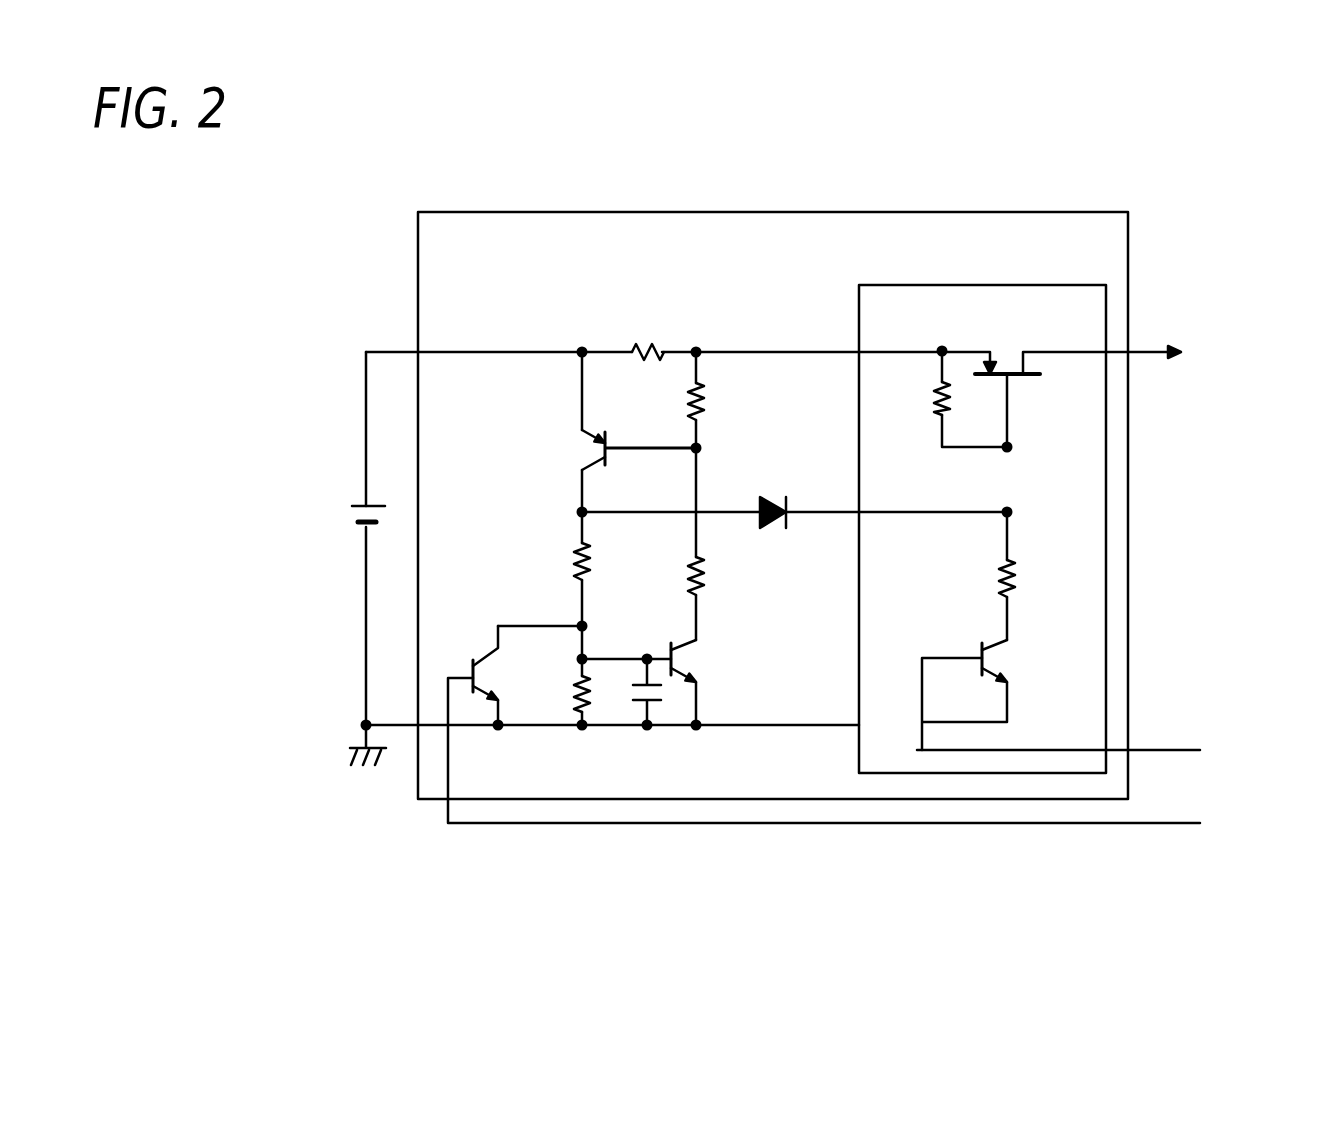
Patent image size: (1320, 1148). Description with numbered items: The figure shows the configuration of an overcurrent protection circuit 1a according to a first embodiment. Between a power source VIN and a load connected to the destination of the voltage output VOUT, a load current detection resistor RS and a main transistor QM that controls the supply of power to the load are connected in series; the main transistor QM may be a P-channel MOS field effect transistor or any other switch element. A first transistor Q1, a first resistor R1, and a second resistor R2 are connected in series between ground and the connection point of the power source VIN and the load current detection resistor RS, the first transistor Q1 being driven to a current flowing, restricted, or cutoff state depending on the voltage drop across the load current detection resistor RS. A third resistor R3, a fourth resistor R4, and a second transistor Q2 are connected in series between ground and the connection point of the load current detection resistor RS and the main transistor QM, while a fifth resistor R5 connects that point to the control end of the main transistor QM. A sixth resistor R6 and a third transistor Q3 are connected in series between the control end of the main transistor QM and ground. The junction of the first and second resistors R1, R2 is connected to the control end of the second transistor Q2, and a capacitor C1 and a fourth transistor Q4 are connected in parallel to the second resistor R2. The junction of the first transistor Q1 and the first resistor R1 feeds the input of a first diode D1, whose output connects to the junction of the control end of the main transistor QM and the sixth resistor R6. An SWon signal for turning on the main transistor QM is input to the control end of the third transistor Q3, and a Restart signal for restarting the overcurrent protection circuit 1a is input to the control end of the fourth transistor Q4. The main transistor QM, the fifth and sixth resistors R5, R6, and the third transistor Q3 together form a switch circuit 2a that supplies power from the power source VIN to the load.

The overcurrent protection circuit 1a is at (773, 490).
The switch circuit 2a is at (982, 513).
The load current detection resistor RS is at (644, 329).
The first resistor R1 is at (551, 563).
The second resistor R2 is at (556, 695).
The third resistor R3 is at (673, 408).
The fourth resistor R4 is at (731, 581).
The fifth resistor R5 is at (915, 409).
The sixth resistor R6 is at (1031, 582).
The capacitor C1 is at (629, 694).
The first transistor Q1 is at (603, 458).
The second transistor Q2 is at (712, 682).
The third transistor Q3 is at (993, 695).
The fourth transistor Q4 is at (473, 672).
The main transistor QM is at (1007, 340).
The first diode D1 is at (794, 491).
The power source VIN is at (329, 633).
The voltage output VOUT is at (1222, 350).
The SWon signal SWon is at (1243, 752).
The Restart signal Restart is at (1253, 825).